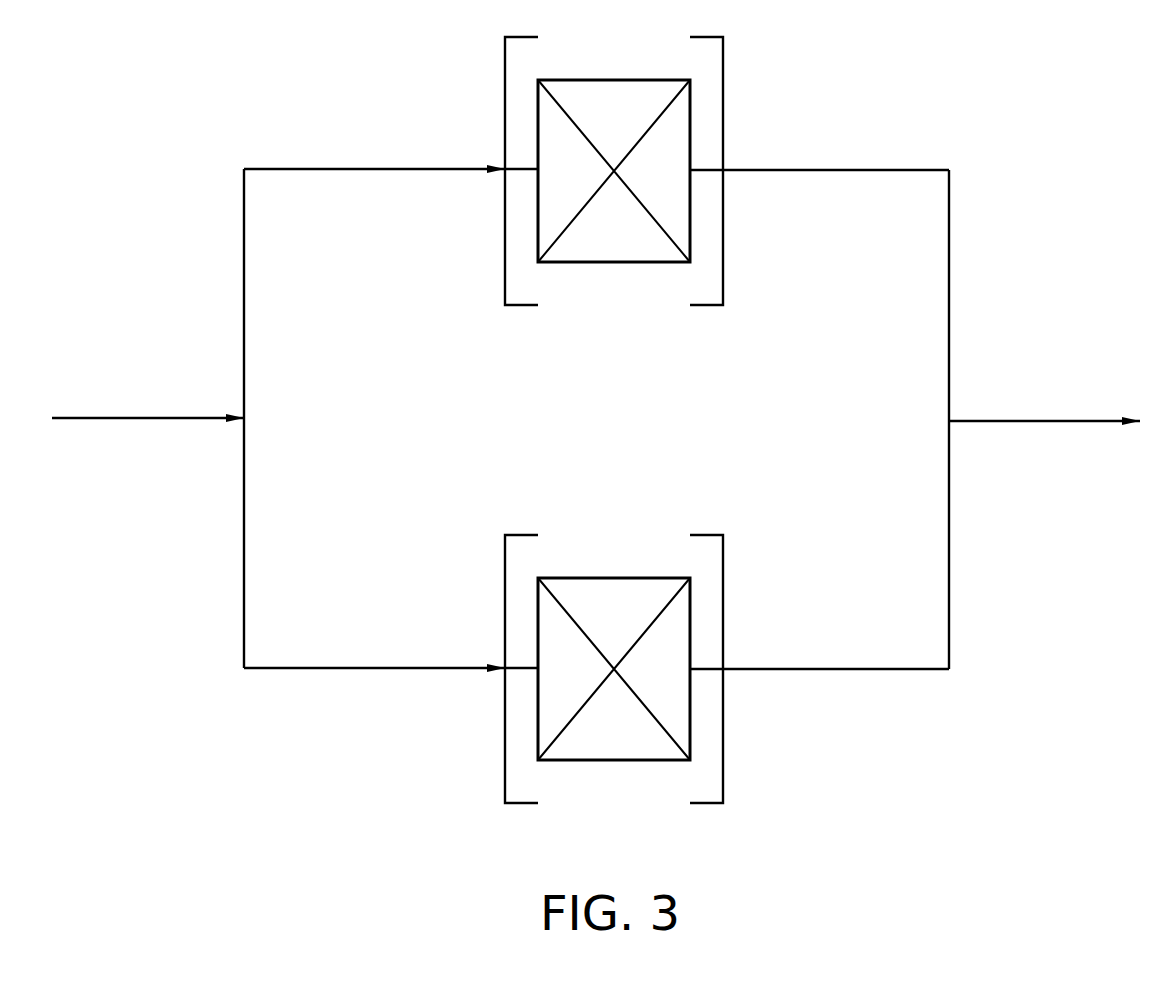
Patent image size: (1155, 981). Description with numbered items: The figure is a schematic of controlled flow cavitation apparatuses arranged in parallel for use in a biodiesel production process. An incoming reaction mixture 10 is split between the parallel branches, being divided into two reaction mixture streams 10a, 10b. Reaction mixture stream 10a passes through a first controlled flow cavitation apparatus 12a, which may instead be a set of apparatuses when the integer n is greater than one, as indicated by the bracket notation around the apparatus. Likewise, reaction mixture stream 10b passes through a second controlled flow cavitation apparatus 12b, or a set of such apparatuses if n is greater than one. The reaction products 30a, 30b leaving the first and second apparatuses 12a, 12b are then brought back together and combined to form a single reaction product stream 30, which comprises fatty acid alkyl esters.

The reaction mixture 10 is at (134, 416).
The reaction mixture stream 10a is at (383, 167).
The reaction mixture stream 10b is at (383, 666).
The first controlled flow cavitation apparatus 12a is at (618, 78).
The second controlled flow cavitation apparatus 12b is at (618, 576).
The reaction product 30a is at (829, 168).
The reaction product 30b is at (829, 667).
The single reaction product stream 30 is at (1043, 419).